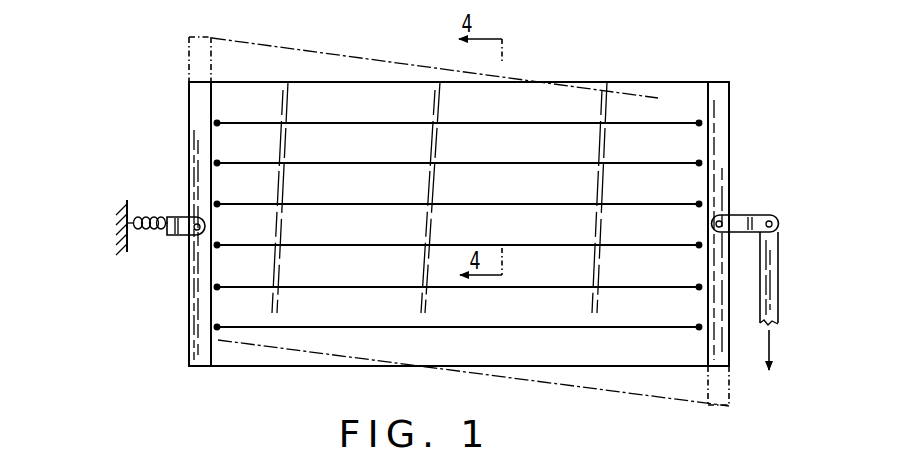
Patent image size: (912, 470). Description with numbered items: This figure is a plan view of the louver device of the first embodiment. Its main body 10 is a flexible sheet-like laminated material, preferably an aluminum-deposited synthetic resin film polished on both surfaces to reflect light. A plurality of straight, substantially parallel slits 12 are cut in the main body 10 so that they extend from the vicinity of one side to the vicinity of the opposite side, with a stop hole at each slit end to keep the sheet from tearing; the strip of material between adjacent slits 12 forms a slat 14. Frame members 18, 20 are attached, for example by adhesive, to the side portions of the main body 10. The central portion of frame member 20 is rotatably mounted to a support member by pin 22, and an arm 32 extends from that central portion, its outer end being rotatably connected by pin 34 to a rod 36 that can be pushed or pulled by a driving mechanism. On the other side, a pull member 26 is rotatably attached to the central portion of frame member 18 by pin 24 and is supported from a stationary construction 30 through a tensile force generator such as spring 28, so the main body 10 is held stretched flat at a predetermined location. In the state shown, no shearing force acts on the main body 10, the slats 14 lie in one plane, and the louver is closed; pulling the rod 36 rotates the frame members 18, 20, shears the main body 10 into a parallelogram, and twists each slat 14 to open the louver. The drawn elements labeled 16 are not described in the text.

The main body 10 is at (657, 79).
The slits 12 is at (513, 203).
The slat 14 is at (325, 162).
The wire end connectors 16 is at (197, 305).
The frame member 18 is at (192, 130).
The frame member 20 is at (731, 171).
The pin 22 is at (723, 221).
The pin 24 is at (187, 235).
The pull member 26 is at (174, 217).
The spring 28 is at (153, 231).
The stationary construction 30 is at (122, 207).
The arm 32 is at (748, 233).
The pin 34 is at (776, 223).
The rod 36 is at (778, 298).